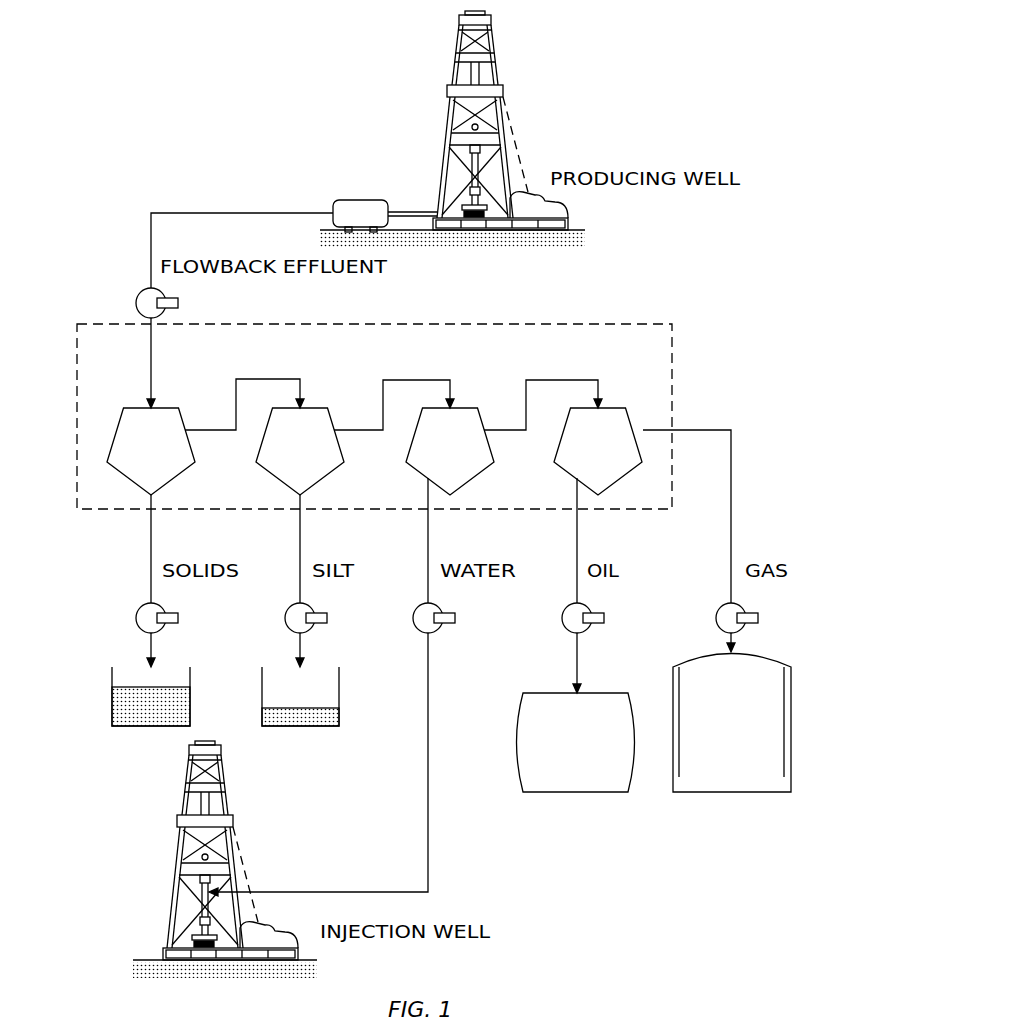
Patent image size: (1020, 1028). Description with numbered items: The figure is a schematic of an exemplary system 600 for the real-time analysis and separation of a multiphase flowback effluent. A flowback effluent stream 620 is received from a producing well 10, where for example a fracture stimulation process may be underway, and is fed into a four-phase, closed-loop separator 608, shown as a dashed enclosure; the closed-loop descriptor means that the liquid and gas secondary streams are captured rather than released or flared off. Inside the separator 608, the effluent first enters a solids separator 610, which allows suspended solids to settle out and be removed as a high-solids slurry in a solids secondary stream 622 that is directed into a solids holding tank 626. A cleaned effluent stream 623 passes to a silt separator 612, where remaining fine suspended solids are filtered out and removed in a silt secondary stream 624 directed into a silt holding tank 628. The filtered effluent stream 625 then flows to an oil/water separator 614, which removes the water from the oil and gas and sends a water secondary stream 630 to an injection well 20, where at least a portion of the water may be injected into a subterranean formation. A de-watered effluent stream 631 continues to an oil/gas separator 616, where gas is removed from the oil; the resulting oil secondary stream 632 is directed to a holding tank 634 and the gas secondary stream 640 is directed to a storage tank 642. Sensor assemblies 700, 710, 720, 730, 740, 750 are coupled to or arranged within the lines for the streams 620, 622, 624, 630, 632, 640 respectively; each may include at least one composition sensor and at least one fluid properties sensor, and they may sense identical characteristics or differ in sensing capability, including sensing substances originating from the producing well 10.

The producing well 10 is at (455, 88).
The injection well 20 is at (178, 819).
The system 600 is at (228, 175).
The separator 608 is at (650, 323).
The solids separator 610 is at (177, 408).
The silt separator 612 is at (326, 408).
The oil/water separator 614 is at (475, 408).
The oil/gas separator 616 is at (623, 408).
The flowback effluent stream 620 is at (151, 248).
The solids secondary stream 622 is at (151, 533).
The cleaned effluent stream 623 is at (240, 379).
The silt secondary stream 624 is at (300, 533).
The filtered effluent stream 625 is at (388, 380).
The solids holding tank 626 is at (112, 678).
The silt holding tank 628 is at (262, 678).
The water secondary stream 630 is at (428, 533).
The de-watered effluent stream 631 is at (533, 380).
The oil secondary stream 632 is at (577, 533).
The holding tank 634 is at (518, 712).
The gas secondary stream 640 is at (731, 533).
The storage tank 642 is at (673, 680).
The sensor assembly 700 is at (138, 300).
The sensor assembly 710 is at (138, 615).
The sensor assembly 720 is at (287, 615).
The sensor assembly 730 is at (415, 615).
The sensor assembly 740 is at (565, 615).
The sensor assembly 750 is at (720, 615).